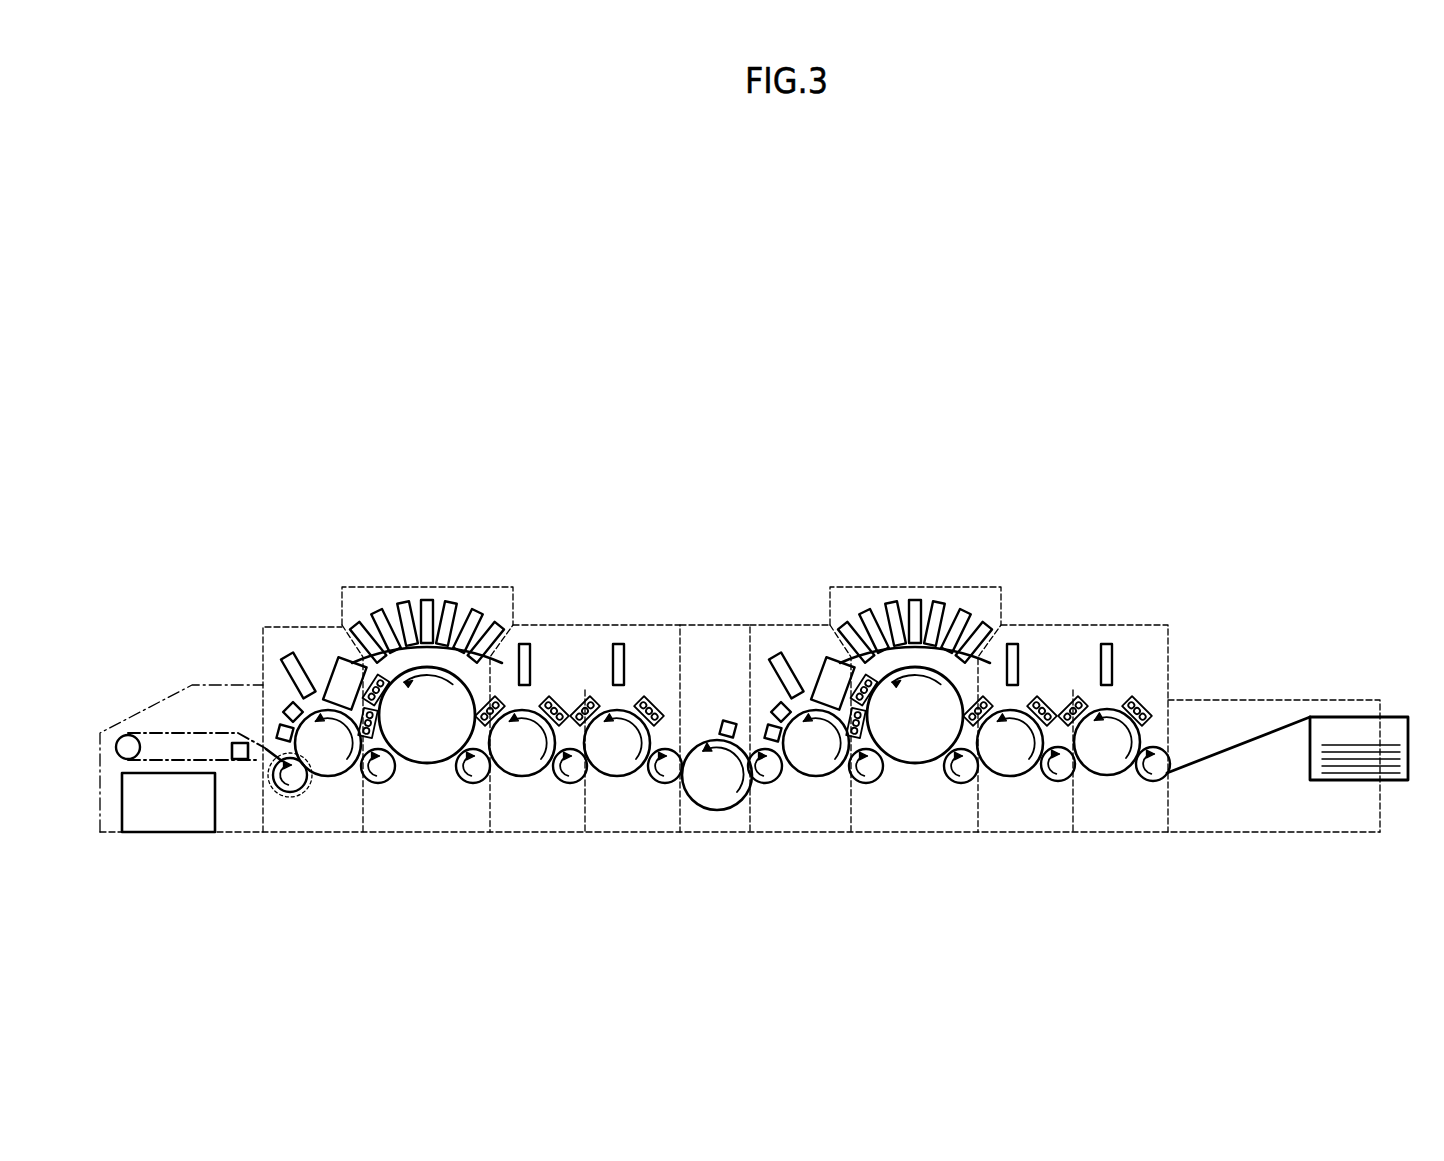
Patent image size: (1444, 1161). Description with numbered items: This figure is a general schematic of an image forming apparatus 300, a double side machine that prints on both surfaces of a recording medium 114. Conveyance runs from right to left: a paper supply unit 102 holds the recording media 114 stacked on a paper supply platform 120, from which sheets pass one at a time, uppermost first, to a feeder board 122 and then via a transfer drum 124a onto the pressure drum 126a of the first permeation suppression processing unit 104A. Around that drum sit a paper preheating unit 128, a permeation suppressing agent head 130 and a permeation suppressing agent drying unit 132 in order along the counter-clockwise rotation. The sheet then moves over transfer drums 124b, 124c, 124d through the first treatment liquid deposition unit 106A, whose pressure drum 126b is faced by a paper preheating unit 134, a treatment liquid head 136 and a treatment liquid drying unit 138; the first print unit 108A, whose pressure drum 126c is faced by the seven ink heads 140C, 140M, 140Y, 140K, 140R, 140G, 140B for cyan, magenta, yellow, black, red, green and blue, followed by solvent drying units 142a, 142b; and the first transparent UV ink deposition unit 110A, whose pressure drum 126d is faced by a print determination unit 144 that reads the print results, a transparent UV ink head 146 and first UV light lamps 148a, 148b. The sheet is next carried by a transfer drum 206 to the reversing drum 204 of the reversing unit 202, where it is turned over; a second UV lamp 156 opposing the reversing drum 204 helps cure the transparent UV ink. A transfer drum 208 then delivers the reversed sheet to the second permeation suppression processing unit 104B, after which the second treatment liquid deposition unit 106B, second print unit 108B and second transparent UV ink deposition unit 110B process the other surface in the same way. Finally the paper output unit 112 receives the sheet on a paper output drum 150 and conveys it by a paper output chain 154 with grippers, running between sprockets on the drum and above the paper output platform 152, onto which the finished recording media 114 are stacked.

The image forming apparatus 300 is at (780, 290).
The paper supply unit 102 is at (1323, 641).
The first permeation suppression processing unit 104A is at (1135, 530).
The second permeation suppression processing unit 104B is at (632, 530).
The first treatment liquid deposition unit 106A is at (1030, 443).
The second treatment liquid deposition unit 106B is at (567, 443).
The first print unit 108A is at (920, 443).
The second print unit 108B is at (432, 443).
The first transparent UV ink deposition unit 110A is at (797, 443).
The second transparent UV ink deposition unit 110B is at (310, 443).
The paper output unit 112 is at (165, 600).
The recording medium 114 is at (1373, 745).
The paper supply platform 120 is at (1397, 782).
The feeder board 122 is at (1227, 747).
The transfer drum 124a is at (1153, 781).
The transfer drum 124b is at (570, 783).
The transfer drum 124c is at (473, 783).
The transfer drum 124d is at (378, 783).
The pressure drum 126a is at (617, 776).
The pressure drum 126b is at (522, 776).
The pressure drum 126c is at (425, 763).
The pressure drum 126d is at (330, 776).
The paper preheating unit 128 is at (649, 702).
The permeation suppressing agent head 130 is at (619, 644).
The permeation suppressing agent drying unit 132 is at (586, 702).
The paper preheating unit 134 is at (553, 703).
The treatment liquid head 136 is at (524, 644).
The treatment liquid drying unit 138 is at (492, 702).
The ink head 140R is at (400, 603).
The ink head 140G is at (377, 612).
The ink head 140B is at (356, 625).
The ink head 140K is at (427, 598).
The ink head 140Y is at (452, 603).
The ink head 140M is at (477, 612).
The ink head 140C is at (497, 625).
The solvent drying unit 142a is at (383, 696).
The solvent drying unit 142b is at (378, 728).
The print determination unit 144 is at (337, 666).
The transparent UV ink head 146 is at (291, 652).
The first UV light lamp 148a is at (288, 708).
The first UV light lamp 148b is at (279, 730).
The paper output drum 150 is at (283, 792).
The paper output platform 152 is at (157, 833).
The paper output chain 154 is at (175, 730).
The second UV lamp 156 is at (240, 762).
The reversing unit 202 is at (725, 530).
The reversing drum 204 is at (717, 810).
The transfer drum 206 is at (765, 783).
The transfer drum 208 is at (665, 783).